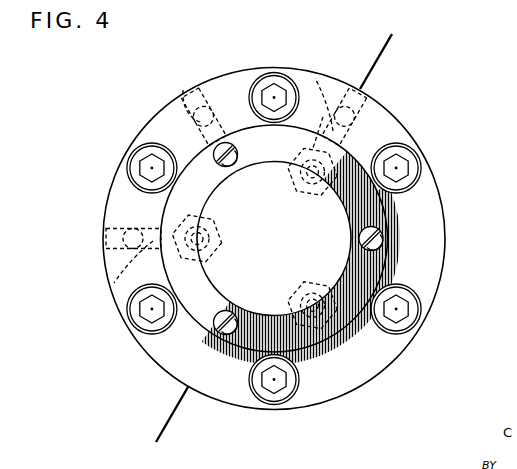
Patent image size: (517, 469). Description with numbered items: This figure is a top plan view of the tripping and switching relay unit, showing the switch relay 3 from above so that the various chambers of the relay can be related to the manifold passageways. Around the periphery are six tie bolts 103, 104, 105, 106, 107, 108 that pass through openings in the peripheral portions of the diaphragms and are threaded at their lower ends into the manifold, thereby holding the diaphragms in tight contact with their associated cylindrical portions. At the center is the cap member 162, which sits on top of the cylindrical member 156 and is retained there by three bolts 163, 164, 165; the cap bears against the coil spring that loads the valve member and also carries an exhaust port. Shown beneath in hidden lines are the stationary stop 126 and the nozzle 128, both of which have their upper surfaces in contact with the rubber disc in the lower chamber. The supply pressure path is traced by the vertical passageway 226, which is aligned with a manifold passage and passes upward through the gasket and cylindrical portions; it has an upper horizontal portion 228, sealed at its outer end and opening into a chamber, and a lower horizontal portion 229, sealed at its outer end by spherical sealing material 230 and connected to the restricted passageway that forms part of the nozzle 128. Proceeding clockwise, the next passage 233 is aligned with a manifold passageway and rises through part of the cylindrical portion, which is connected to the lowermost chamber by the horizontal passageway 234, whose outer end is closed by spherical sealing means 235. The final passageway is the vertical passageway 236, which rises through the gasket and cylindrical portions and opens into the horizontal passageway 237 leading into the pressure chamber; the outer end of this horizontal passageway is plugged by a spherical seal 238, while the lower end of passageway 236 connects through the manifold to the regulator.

The switch relay 3 is at (374, 38).
The tie bolt 103 is at (409, 323).
The tie bolt 104 is at (273, 398).
The tie bolt 105 is at (136, 318).
The tie bolt 106 is at (134, 160).
The tie bolt 107 is at (272, 73).
The tie bolt 108 is at (412, 164).
The stationary stop 126 is at (298, 288).
The nozzle 128 is at (300, 200).
The cylindrical member 156 is at (360, 357).
The cap member 162 is at (327, 255).
The connecting bolt 163 is at (384, 241).
The bolt 164 is at (213, 317).
The connecting bolt 165 is at (215, 150).
The vertical passageway 226 is at (356, 118).
The upper horizontal portion 228 is at (323, 117).
The lower horizontal portion 229 is at (346, 143).
The spherical sealing material 230 is at (352, 98).
The passage 233 is at (125, 248).
The horizontal passageway 234 is at (113, 283).
The spherical sealing means 235 is at (107, 236).
The vertical passageway 236 is at (183, 97).
The horizontal passageway 237 is at (227, 128).
The spherical seal 238 is at (204, 100).